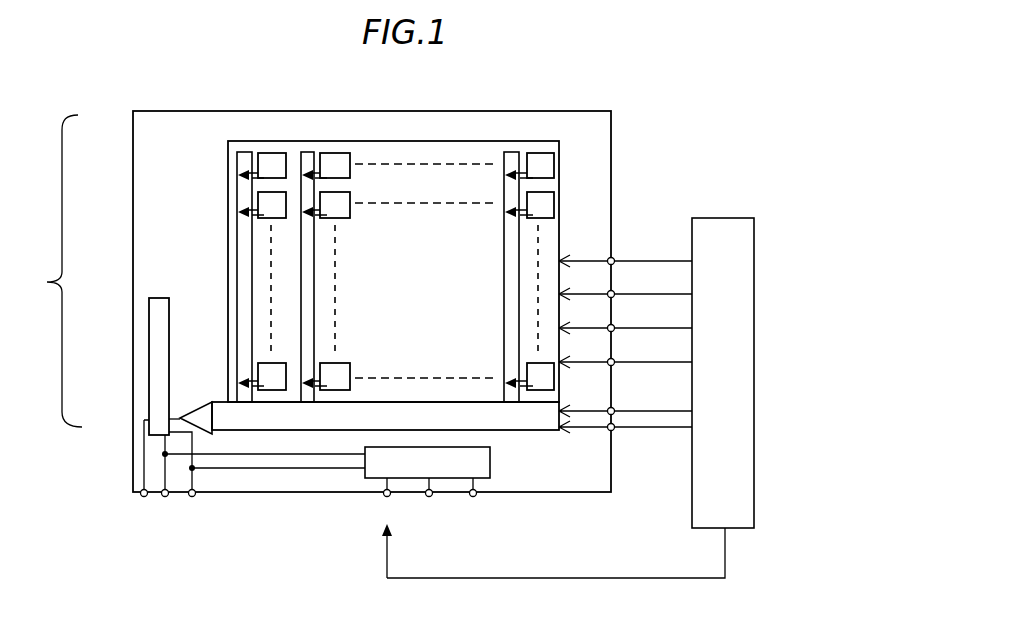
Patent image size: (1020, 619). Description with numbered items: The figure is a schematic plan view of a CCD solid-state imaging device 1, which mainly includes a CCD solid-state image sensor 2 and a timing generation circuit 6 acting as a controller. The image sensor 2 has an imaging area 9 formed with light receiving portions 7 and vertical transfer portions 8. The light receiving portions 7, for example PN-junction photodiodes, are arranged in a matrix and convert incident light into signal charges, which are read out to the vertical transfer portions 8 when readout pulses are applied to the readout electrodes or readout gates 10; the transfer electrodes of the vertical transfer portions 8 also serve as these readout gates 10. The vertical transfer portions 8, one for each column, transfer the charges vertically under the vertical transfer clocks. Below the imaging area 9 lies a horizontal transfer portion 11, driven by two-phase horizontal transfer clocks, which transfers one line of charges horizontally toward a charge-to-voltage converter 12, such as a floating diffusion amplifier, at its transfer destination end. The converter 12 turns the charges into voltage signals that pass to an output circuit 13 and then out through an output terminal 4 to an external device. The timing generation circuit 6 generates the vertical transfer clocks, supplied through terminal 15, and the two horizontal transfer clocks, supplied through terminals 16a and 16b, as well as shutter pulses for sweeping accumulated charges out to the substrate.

The CCD solid-state imaging device 1 is at (642, 139).
The CCD solid-state image sensor 2 is at (55, 271).
The output terminal 4 is at (138, 494).
The timing generation circuit 6 is at (728, 230).
The light receiving portions 7 is at (270, 158).
The vertical transfer portions 8 is at (514, 156).
The imaging area 9 is at (428, 295).
The readout electrodes (readout gates) 10 is at (317, 168).
The horizontal transfer portion 11 is at (385, 416).
The charge-to-voltage converter 12 is at (196, 413).
The output circuit 13 is at (162, 328).
The terminal 15 is at (614, 259).
The terminal 16a is at (614, 410).
The terminal 16b is at (614, 430).